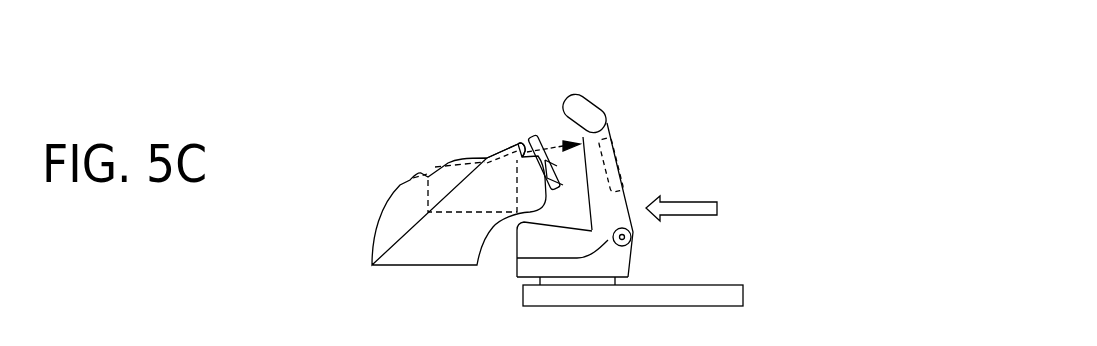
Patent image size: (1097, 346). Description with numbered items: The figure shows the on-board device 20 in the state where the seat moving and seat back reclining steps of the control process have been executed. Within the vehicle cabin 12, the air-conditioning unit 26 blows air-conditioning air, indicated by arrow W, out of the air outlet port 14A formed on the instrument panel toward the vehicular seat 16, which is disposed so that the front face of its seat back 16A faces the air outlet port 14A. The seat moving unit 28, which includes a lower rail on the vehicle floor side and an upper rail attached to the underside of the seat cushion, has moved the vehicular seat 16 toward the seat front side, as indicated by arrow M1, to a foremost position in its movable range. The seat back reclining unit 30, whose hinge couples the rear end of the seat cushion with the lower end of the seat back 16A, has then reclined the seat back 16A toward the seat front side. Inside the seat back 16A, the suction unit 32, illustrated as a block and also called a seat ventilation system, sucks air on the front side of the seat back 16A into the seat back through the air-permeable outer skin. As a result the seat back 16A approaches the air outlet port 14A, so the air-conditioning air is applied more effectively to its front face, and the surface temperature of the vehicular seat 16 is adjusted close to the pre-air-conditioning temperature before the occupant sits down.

The vehicle cabin 12 is at (692, 185).
The air outlet port 14A is at (525, 140).
The vehicular seat 16 is at (635, 162).
The seat back 16A is at (620, 137).
The on-board device 20 is at (772, 231).
The air-conditioning unit 26 is at (413, 178).
The seat moving unit 28 is at (756, 282).
The seat back reclining unit 30 is at (640, 238).
The suction unit 32 is at (631, 132).
The arrow indicating seat movement to the seat front side M1 is at (703, 202).
The arrow indicating air-conditioning air W is at (540, 145).